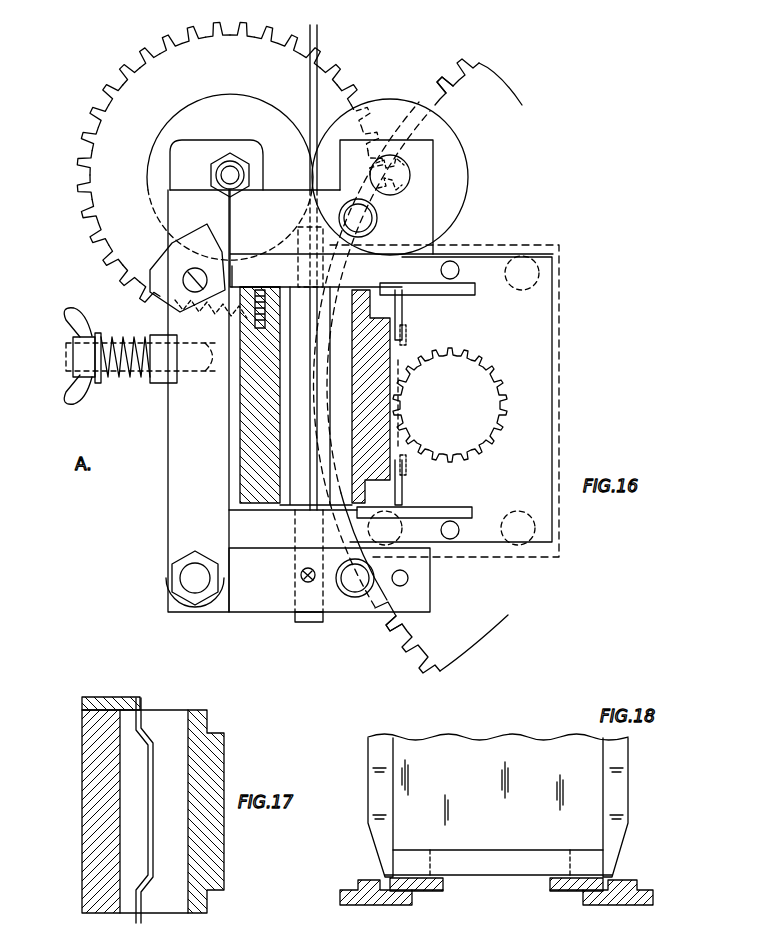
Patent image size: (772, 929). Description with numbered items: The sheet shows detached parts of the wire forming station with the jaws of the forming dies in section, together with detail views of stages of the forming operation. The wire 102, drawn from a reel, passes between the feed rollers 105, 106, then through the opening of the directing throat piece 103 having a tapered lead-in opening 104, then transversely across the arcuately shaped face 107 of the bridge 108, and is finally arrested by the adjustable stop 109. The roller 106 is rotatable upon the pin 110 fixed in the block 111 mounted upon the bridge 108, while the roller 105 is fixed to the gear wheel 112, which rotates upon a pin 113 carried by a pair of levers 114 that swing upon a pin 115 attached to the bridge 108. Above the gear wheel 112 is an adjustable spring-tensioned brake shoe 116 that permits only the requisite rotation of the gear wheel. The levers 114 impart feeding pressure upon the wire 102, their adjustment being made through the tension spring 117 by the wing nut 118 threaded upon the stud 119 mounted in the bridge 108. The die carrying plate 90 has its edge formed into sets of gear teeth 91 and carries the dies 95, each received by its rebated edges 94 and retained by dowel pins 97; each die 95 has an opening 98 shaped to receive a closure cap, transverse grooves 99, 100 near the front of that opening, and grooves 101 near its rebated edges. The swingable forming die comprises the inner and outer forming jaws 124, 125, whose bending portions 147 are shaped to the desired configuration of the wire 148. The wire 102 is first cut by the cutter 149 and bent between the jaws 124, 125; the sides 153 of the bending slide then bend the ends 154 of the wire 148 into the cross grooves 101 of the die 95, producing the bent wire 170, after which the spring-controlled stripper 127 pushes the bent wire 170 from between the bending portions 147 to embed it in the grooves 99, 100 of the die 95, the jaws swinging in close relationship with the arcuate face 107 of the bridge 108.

In FIG. 16, the die carrying plate 90 is at (418, 366).
In FIG. 16, the gear teeth 91 is at (442, 96).
In FIG. 18, the rebated edges 94 is at (358, 885).
In FIG. 16, the die 95 is at (444, 401).
In FIG. 18, the die 95 is at (595, 904).
In FIG. 16, the dowel pins 97 is at (454, 259).
In FIG. 16, the opening 98 is at (450, 405).
In FIG. 16, the groove 99 is at (407, 300).
In FIG. 16, the groove 100 is at (408, 336).
In FIG. 16, the grooves 101 is at (465, 290).
In FIG. 18, the grooves 101 is at (382, 877).
In FIG. 16, the wire 102 is at (317, 36).
In FIG. 16, the directing throat piece 103 is at (297, 260).
In FIG. 16, the tapered lead-in opening 104 is at (310, 233).
In FIG. 16, the feed roller 105 is at (230, 177).
In FIG. 16, the feed roller 106 is at (450, 176).
In FIG. 16, the arcuately shaped face 107 is at (255, 438).
In FIG. 16, the bridge 108 is at (263, 596).
In FIG. 16, the adjustable stop 109 is at (315, 616).
In FIG. 16, the pin 110 is at (408, 175).
In FIG. 16, the block 111 is at (415, 208).
In FIG. 16, the gear wheel 112 is at (229, 163).
In FIG. 16, the pin 113 is at (232, 173).
In FIG. 16, the levers 114 is at (187, 157).
In FIG. 16, the pin 115 is at (190, 584).
In FIG. 16, the brake shoe 116 is at (172, 246).
In FIG. 16, the tension spring 117 is at (136, 377).
In FIG. 16, the wing nut 118 is at (82, 394).
In FIG. 16, the stud 119 is at (125, 340).
In FIG. 16, the inner forming jaw 124 is at (368, 457).
In FIG. 17, the inner forming jaw 124 is at (210, 881).
In FIG. 16, the outer forming jaw 125 is at (250, 468).
In FIG. 17, the outer forming jaw 125 is at (97, 851).
In FIG. 18, the stripper 127 is at (498, 842).
In FIG. 16, the bending portions 147 is at (310, 392).
In FIG. 17, the bending portions 147 is at (154, 812).
In FIG. 17, the wire 148 is at (147, 728).
In FIG. 16, the cutter 149 is at (297, 288).
In FIG. 17, the cutter 149 is at (130, 697).
In FIG. 18, the sides 153 is at (378, 752).
In FIG. 18, the ends 154 is at (388, 874).
In FIG. 16, the bent wire 170 is at (430, 412).